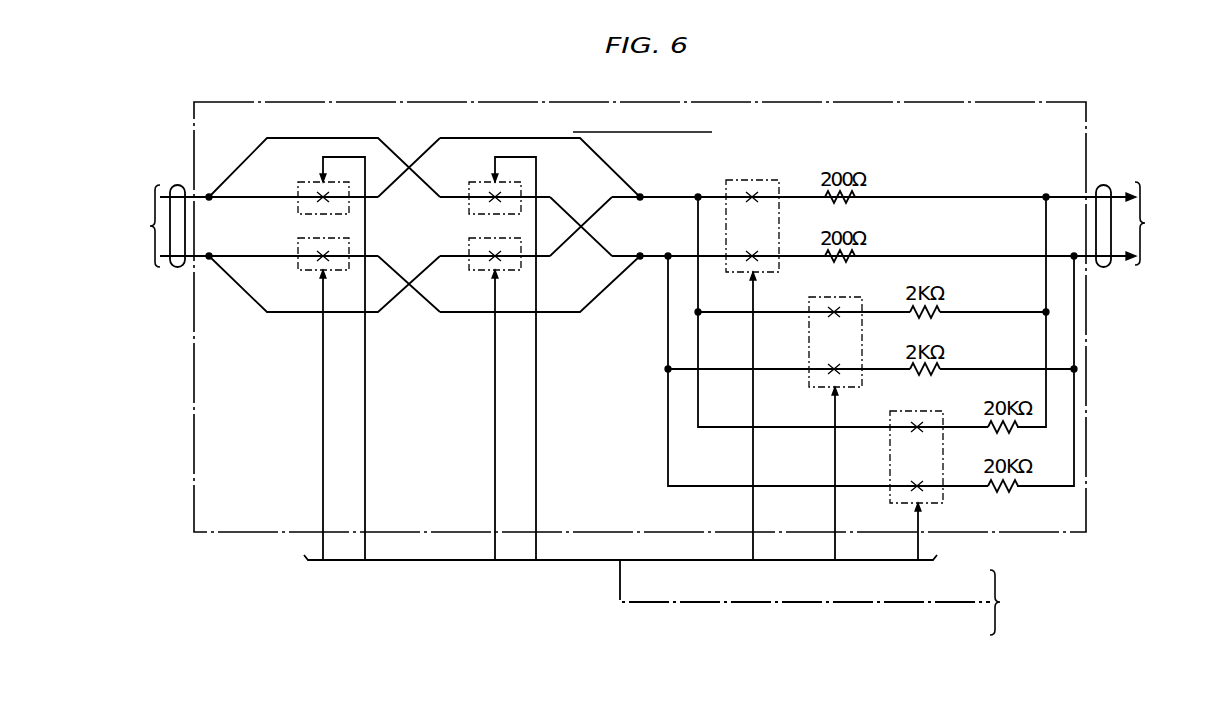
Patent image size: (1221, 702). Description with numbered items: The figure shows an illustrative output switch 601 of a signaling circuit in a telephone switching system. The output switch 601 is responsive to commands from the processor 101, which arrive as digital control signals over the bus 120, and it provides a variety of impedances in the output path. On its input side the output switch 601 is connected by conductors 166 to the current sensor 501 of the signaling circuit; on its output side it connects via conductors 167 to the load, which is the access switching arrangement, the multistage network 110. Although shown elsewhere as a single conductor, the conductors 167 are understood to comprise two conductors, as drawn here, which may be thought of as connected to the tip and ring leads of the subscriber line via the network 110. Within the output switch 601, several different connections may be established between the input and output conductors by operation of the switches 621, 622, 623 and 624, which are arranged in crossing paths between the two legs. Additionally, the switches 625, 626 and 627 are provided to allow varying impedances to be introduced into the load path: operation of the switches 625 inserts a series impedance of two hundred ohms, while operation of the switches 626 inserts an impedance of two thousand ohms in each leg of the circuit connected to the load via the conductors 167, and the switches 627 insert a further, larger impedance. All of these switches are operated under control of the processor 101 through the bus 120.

The output switch 601 is at (645, 102).
The switch 621 is at (307, 182).
The switch 622 is at (307, 270).
The switch 623 is at (478, 182).
The switch 624 is at (481, 270).
The switches 625 is at (757, 180).
The switches 626 is at (836, 297).
The switches 627 is at (918, 411).
The conductors 166 is at (178, 185).
The conductors 167 is at (1103, 185).
The current sensor 501 is at (116, 226).
The multistage network 110 is at (1175, 223).
The processor 101 is at (1047, 602).
The bus 120 is at (863, 603).